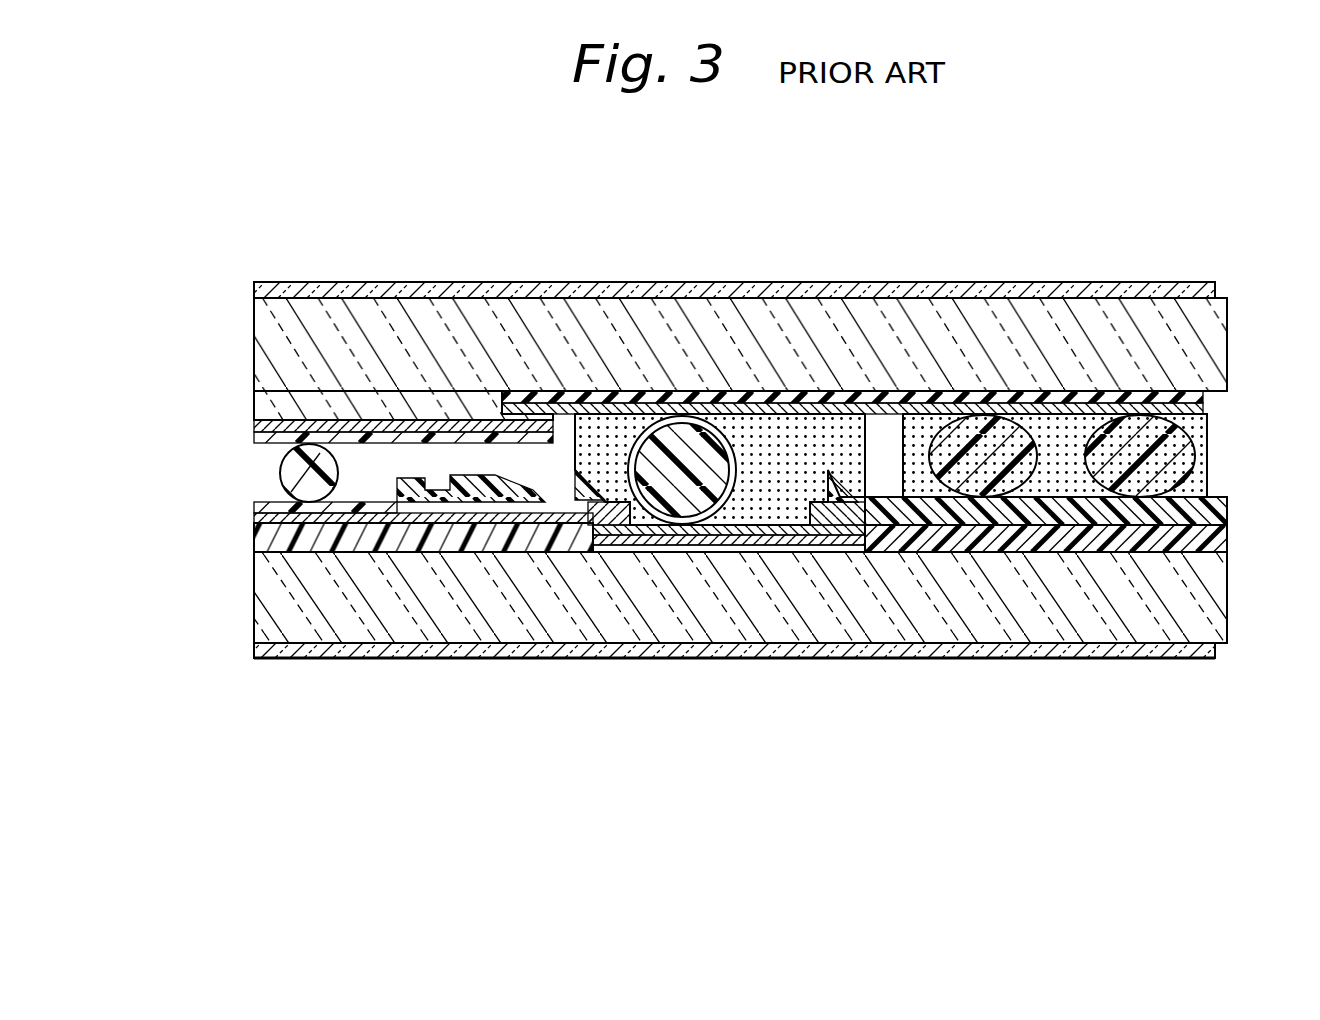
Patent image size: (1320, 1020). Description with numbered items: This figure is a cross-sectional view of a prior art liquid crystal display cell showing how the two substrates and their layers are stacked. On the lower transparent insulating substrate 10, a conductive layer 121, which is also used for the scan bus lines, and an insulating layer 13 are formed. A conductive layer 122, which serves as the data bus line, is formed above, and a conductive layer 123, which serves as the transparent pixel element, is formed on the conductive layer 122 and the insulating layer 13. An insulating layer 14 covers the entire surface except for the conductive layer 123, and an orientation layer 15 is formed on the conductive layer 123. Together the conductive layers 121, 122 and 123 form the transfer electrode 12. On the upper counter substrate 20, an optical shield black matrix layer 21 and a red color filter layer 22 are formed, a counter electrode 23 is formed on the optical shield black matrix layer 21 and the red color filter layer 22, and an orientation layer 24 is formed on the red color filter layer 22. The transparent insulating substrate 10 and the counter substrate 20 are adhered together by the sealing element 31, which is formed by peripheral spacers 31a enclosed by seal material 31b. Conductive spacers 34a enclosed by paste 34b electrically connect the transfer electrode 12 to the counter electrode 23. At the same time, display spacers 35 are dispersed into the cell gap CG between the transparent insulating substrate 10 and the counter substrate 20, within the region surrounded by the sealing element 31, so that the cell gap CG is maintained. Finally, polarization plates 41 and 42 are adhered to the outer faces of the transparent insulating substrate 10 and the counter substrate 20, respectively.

The transparent insulating substrate 10 is at (1228, 575).
The transfer electrode 12 is at (833, 770).
The conductive layer 121 is at (795, 556).
The conductive layer 122 is at (483, 556).
The conductive layer 123 is at (303, 556).
The insulating layer 13 is at (1196, 540).
The insulating layer 14 is at (1196, 510).
The orientation layer 15 is at (262, 508).
The counter substrate 20 is at (1228, 335).
The optical shield black matrix layer 21 is at (560, 398).
The red color filter layer 22 is at (467, 403).
The counter electrode 23 is at (373, 426).
The orientation layer 24 is at (262, 437).
The sealing element 31 is at (1216, 400).
The peripheral spacers 31a is at (1125, 427).
The seal material 31b is at (1003, 433).
The conductive spacers 34a is at (690, 445).
The paste 34b is at (820, 430).
The display spacers 35 is at (306, 445).
The polarization plate 41 is at (1085, 660).
The polarization plate 42 is at (1183, 284).
The cell gap CG is at (258, 470).